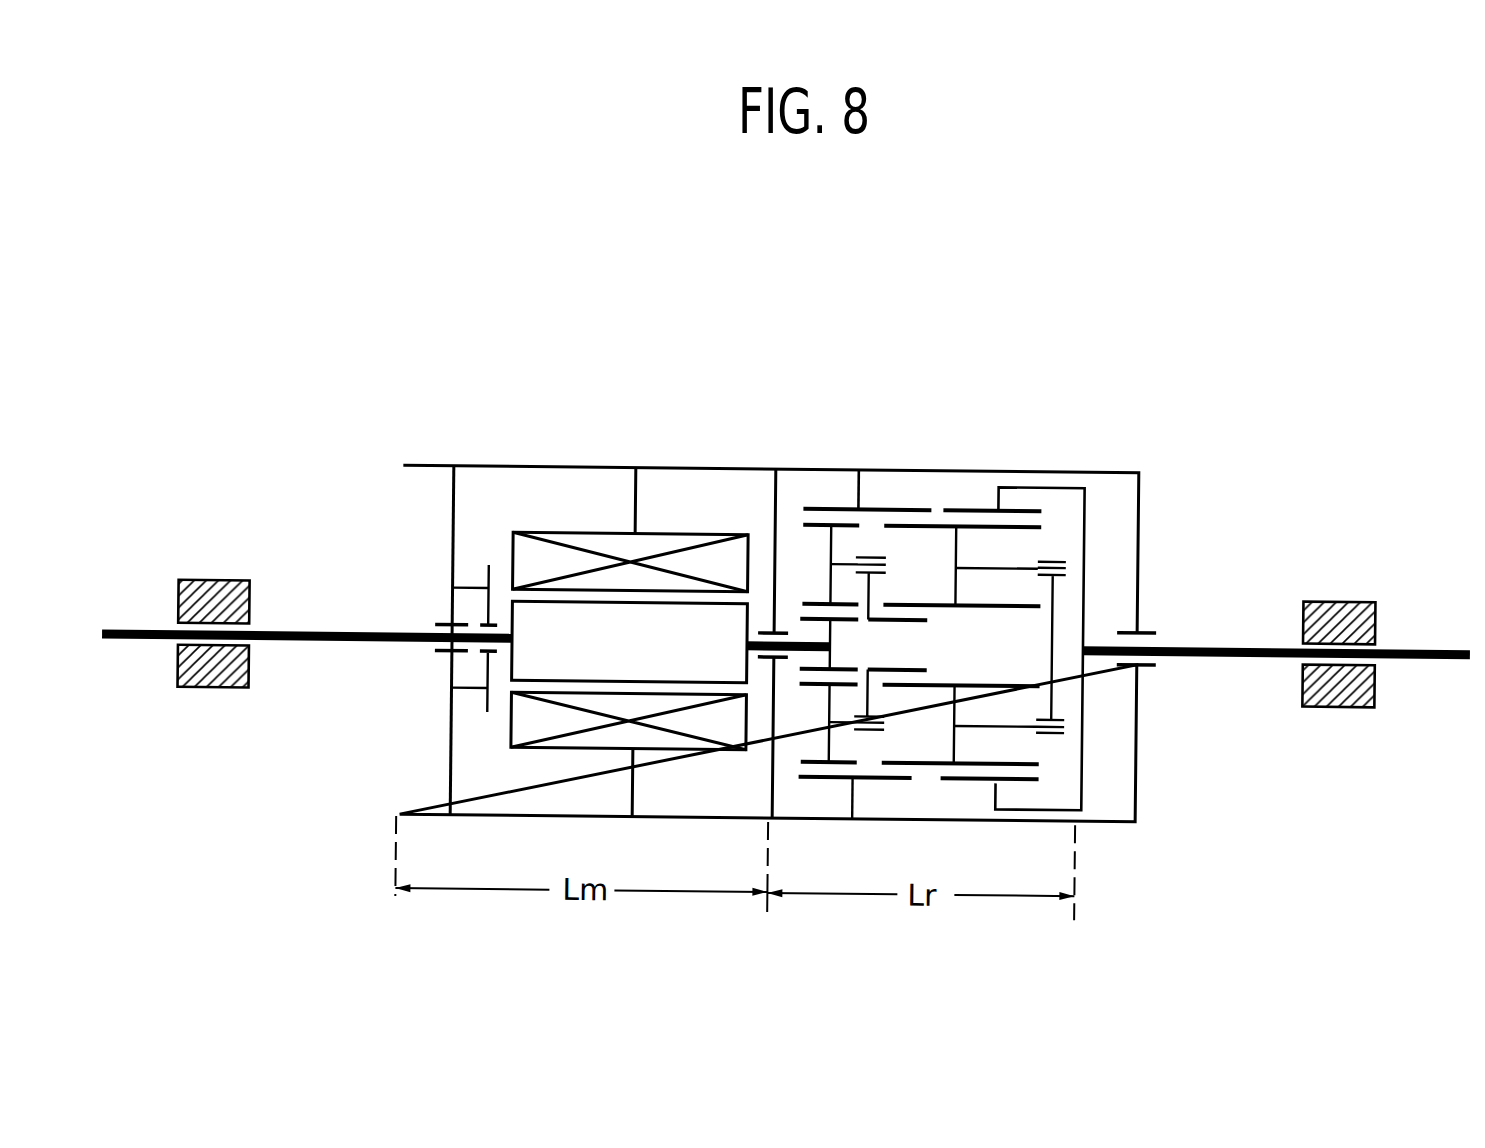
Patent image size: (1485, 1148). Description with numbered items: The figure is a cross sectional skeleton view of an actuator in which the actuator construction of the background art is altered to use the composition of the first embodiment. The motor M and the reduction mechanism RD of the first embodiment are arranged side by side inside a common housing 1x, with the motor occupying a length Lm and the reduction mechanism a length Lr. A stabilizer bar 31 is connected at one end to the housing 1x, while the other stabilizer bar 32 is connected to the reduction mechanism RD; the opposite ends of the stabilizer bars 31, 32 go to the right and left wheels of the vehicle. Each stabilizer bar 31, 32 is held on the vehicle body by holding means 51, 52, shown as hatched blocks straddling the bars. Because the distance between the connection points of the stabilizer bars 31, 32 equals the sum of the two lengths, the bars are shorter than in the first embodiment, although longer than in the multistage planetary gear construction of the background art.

The housing 1x is at (482, 469).
The motor M is at (674, 503).
The reduction mechanism RD is at (952, 494).
The stabilizer bar 31 is at (335, 634).
The stabilizer bar 32 is at (1223, 641).
The holding means 51 is at (208, 586).
The holding means 52 is at (1335, 596).